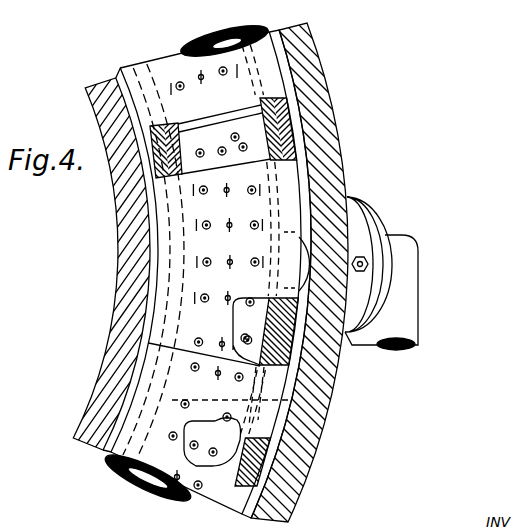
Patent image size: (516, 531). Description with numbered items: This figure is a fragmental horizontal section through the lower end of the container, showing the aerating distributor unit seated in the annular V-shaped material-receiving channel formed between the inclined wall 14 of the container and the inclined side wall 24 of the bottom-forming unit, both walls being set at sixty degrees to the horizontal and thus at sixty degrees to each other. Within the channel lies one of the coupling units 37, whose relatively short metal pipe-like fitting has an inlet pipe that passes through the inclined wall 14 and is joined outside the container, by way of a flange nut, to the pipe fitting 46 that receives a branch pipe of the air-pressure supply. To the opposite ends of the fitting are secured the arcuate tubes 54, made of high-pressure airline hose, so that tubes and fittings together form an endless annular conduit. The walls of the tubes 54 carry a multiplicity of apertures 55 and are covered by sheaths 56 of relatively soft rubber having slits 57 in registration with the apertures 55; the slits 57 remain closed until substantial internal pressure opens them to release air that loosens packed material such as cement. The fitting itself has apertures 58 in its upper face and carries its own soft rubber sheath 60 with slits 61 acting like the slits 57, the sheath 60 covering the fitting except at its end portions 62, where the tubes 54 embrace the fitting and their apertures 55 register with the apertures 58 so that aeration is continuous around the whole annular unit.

The inclined wall 14 is at (313, 72).
The side wall of the bottom-forming unit 24 is at (124, 254).
The coupling unit 37 is at (378, 205).
The pipe fitting 46 is at (414, 305).
The arcuate tube 54 is at (155, 88).
The aperture 55 is at (198, 445).
The sheath 56 is at (244, 30).
The slit 57 is at (211, 112).
The aperture 58 is at (207, 150).
The sheath 60 is at (297, 187).
The slit 61 is at (205, 308).
The end portion 62 is at (288, 124).